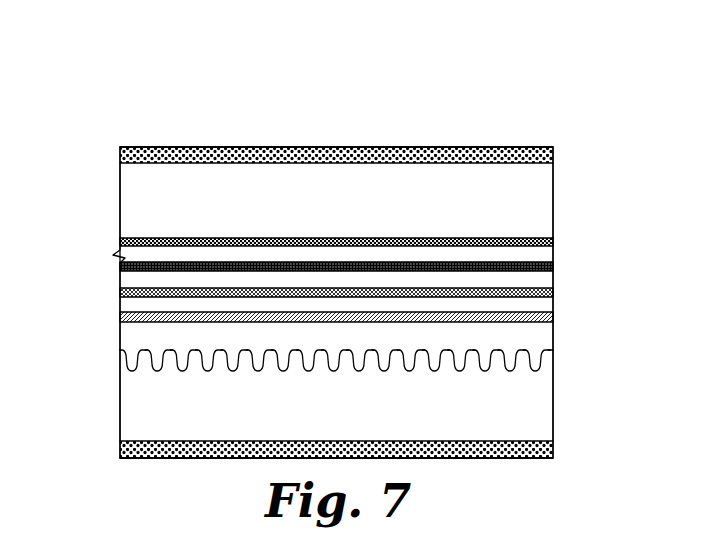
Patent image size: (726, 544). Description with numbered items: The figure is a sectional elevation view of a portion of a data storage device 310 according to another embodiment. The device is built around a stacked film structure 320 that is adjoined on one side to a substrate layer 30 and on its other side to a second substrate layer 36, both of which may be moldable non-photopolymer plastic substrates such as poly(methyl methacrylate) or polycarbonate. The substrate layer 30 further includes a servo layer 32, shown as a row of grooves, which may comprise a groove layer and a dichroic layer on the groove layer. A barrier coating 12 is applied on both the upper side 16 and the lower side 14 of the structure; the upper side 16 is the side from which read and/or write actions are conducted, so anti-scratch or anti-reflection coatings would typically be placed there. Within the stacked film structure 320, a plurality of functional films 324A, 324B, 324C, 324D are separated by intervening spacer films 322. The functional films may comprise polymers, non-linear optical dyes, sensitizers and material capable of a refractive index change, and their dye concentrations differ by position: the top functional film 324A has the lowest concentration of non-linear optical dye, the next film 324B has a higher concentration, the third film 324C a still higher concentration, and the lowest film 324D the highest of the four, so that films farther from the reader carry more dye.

The data storage device 310 is at (557, 100).
The upper side 16 is at (115, 138).
The lower side 14 is at (95, 465).
The barrier coating 12 is at (553, 155).
The second substrate layer 36 is at (115, 197).
The substrate layer 30 is at (115, 397).
The stacked film structure 320 is at (110, 238).
The spacer film 322 is at (553, 253).
The top functional film 324A is at (553, 242).
The second functional film 324B is at (553, 267).
The third functional film 324C is at (553, 292).
The fourth functional film 324D is at (553, 317).
The servo layer 32 is at (557, 364).